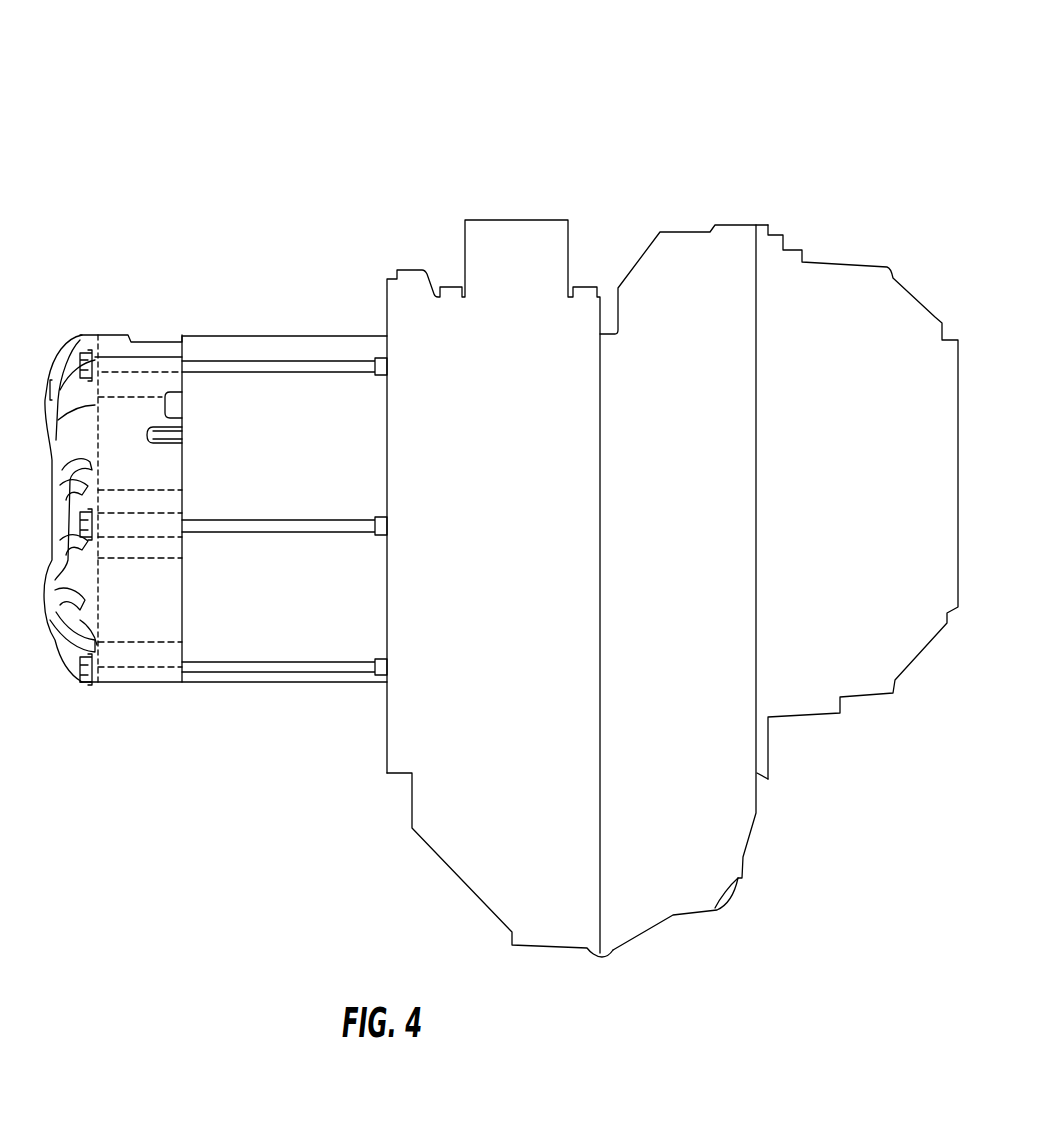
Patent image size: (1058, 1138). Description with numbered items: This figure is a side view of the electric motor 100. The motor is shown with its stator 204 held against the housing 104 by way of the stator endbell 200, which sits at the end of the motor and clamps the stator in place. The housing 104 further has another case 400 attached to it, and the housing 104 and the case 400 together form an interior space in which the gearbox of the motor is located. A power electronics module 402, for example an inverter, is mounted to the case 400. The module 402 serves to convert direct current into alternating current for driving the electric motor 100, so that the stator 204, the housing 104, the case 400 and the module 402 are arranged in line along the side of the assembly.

The electric motor 100 is at (742, 89).
The housing 104 is at (445, 878).
The stator endbell 200 is at (110, 333).
The stator 204 is at (242, 335).
The case 400 is at (745, 857).
The power electronics module 402 is at (903, 288).